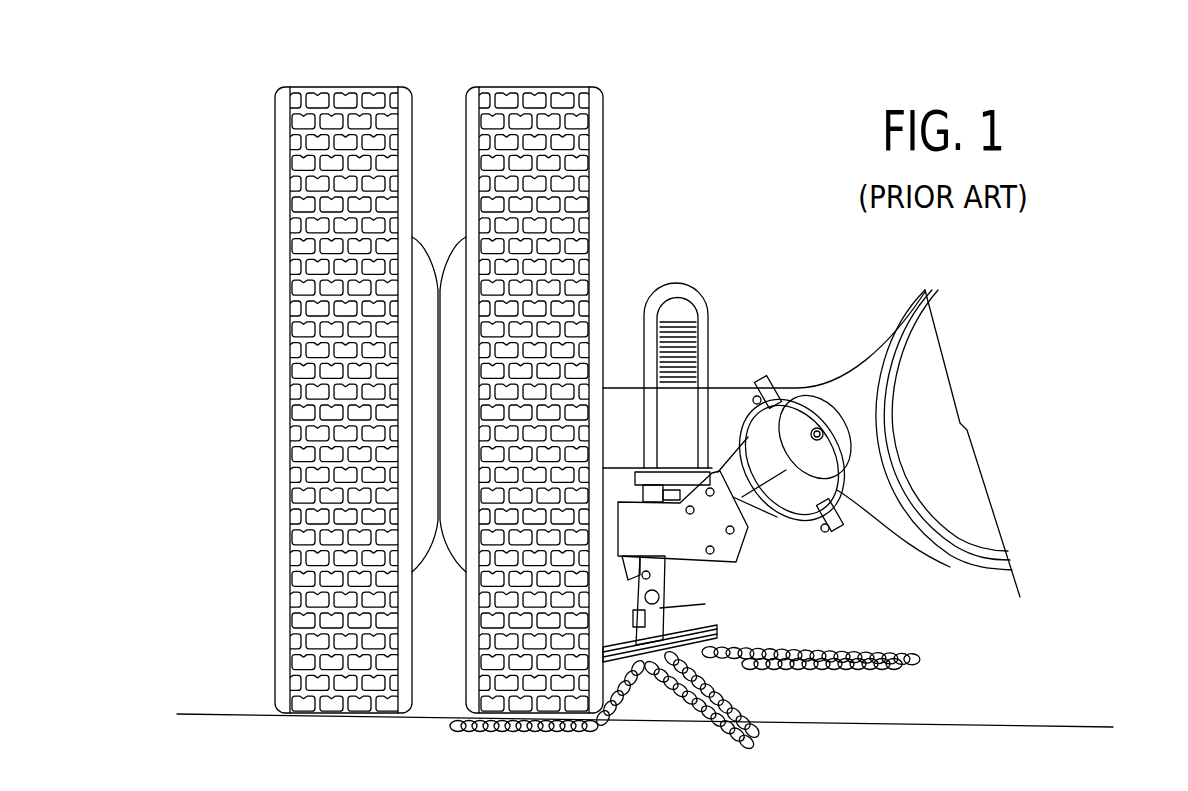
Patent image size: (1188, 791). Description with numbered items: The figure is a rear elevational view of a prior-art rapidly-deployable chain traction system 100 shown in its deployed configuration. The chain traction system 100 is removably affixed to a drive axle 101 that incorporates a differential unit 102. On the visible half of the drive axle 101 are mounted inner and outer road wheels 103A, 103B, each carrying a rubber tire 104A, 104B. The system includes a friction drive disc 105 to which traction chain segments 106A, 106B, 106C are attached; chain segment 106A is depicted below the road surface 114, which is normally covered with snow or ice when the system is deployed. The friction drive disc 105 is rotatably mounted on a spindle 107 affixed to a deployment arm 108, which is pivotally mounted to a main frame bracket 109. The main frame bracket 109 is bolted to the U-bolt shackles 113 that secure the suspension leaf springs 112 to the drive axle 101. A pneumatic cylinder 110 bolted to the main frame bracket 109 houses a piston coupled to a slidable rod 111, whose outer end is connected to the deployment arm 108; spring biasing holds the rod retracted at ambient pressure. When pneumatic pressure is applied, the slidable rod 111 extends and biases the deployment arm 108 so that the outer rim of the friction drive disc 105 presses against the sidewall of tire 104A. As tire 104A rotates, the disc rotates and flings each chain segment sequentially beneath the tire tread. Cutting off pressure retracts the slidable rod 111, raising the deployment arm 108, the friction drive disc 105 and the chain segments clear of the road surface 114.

The chain traction system 100 is at (918, 634).
The drive axle 101 is at (625, 408).
The differential unit 102 is at (922, 400).
The inner road wheel 103A is at (458, 255).
The outer road wheel 103B is at (417, 255).
The rubber tire 104A is at (548, 96).
The rubber tire 104B is at (332, 92).
The friction drive disc 105 is at (718, 630).
The traction chain segment 106A is at (455, 735).
The traction chain segment 106B is at (752, 748).
The traction chain segment 106C is at (865, 684).
The spindle 107 is at (660, 611).
The deployment arm 108 is at (705, 606).
The main frame bracket 109 is at (673, 540).
The pneumatic cylinder 110 is at (778, 523).
The slidable rod 111 is at (655, 562).
The suspension leaf springs 112 is at (678, 340).
The U-bolt shackles 113 is at (702, 337).
The road surface 114 is at (239, 712).